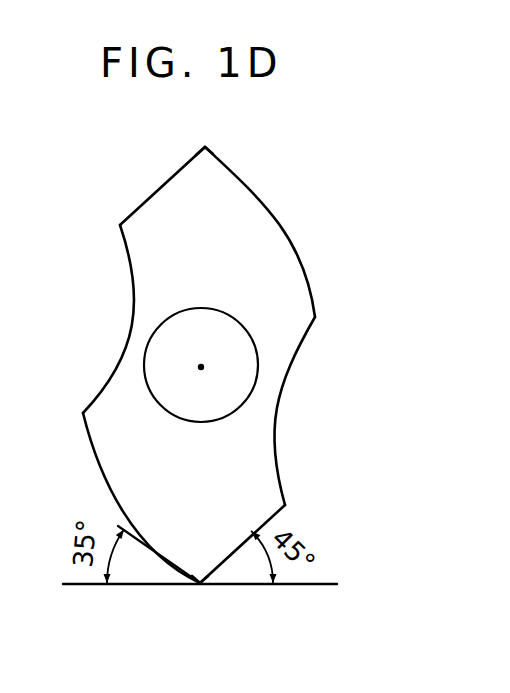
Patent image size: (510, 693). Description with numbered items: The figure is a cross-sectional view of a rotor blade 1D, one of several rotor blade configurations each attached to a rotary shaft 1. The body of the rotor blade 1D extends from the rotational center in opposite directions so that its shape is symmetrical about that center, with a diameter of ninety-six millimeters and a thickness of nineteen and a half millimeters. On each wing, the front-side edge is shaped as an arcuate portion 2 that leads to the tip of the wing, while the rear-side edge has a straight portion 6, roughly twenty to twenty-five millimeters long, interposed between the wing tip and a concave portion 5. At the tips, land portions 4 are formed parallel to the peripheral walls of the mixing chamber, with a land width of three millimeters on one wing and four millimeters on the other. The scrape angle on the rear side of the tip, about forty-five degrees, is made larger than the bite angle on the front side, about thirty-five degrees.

The rotor blade 1D is at (288, 292).
The rotary shaft 1 is at (176, 363).
The arcuate portion 2 is at (272, 206).
The land portion 4 is at (205, 148).
The concave portion 5 is at (134, 284).
The straight portion 6 is at (153, 188).